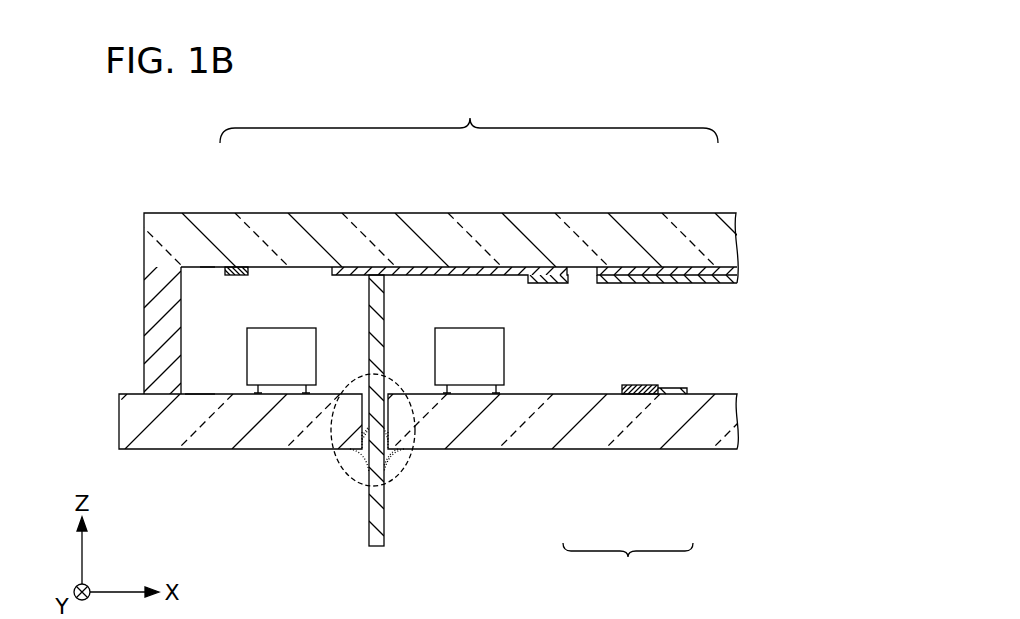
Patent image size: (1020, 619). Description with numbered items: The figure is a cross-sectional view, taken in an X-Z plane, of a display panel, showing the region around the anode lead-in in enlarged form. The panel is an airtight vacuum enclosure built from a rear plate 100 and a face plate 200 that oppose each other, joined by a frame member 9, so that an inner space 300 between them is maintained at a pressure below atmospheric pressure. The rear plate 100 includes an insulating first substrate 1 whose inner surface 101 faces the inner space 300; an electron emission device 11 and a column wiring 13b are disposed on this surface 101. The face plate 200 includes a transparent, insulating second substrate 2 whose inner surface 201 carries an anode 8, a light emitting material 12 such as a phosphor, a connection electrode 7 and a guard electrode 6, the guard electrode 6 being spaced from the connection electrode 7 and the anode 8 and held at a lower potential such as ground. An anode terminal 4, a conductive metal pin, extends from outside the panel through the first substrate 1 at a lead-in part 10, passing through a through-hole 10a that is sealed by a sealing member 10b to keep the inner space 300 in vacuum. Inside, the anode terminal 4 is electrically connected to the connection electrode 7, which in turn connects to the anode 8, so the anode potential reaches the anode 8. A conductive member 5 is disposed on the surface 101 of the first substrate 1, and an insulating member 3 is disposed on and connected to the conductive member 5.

The first substrate 1 is at (583, 432).
The second substrate 2 is at (545, 240).
The insulating member 3 is at (310, 335).
The anode terminal 4 is at (383, 523).
The conductive member 5 is at (305, 392).
The guard electrode 6 is at (238, 268).
The connection electrode 7 is at (426, 268).
The anode 8 is at (637, 272).
The frame member 9 is at (163, 313).
The lead-in part 10 is at (336, 462).
The through-hole 10a is at (386, 425).
The sealing member 10b is at (387, 463).
The electron emission device 11 is at (667, 397).
The light emitting material 12 is at (703, 278).
The column wiring 13b is at (632, 397).
The rear plate 100 is at (628, 567).
The surface of the first substrate 101 is at (200, 392).
The face plate 200 is at (469, 114).
The surface of the second substrate 201 is at (212, 272).
The inner space 300 is at (206, 339).